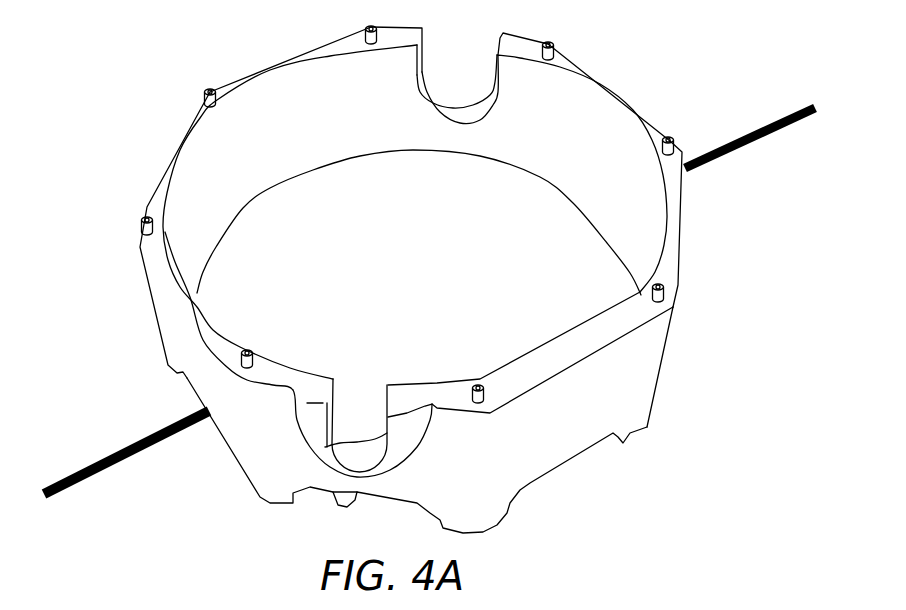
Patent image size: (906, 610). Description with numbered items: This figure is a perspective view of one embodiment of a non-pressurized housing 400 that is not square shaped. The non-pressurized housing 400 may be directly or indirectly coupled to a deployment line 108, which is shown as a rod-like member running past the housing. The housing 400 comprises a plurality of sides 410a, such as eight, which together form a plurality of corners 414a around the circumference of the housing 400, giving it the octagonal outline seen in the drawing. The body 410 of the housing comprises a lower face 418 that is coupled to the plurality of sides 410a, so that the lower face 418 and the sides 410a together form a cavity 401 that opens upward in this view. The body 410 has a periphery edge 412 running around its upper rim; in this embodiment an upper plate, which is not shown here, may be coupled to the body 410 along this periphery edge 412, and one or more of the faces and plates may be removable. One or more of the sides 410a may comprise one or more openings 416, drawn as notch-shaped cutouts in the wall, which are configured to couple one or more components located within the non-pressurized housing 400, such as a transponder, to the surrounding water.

The non-pressurized housing 400 is at (72, 131).
The lower face 418 is at (323, 213).
The cavity 401 is at (443, 267).
The periphery edge 412 is at (674, 213).
The corners 414a is at (669, 346).
The sides 410a is at (643, 379).
The body 410 is at (537, 445).
The openings 416 is at (360, 418).
The deployment line 108 is at (75, 476).